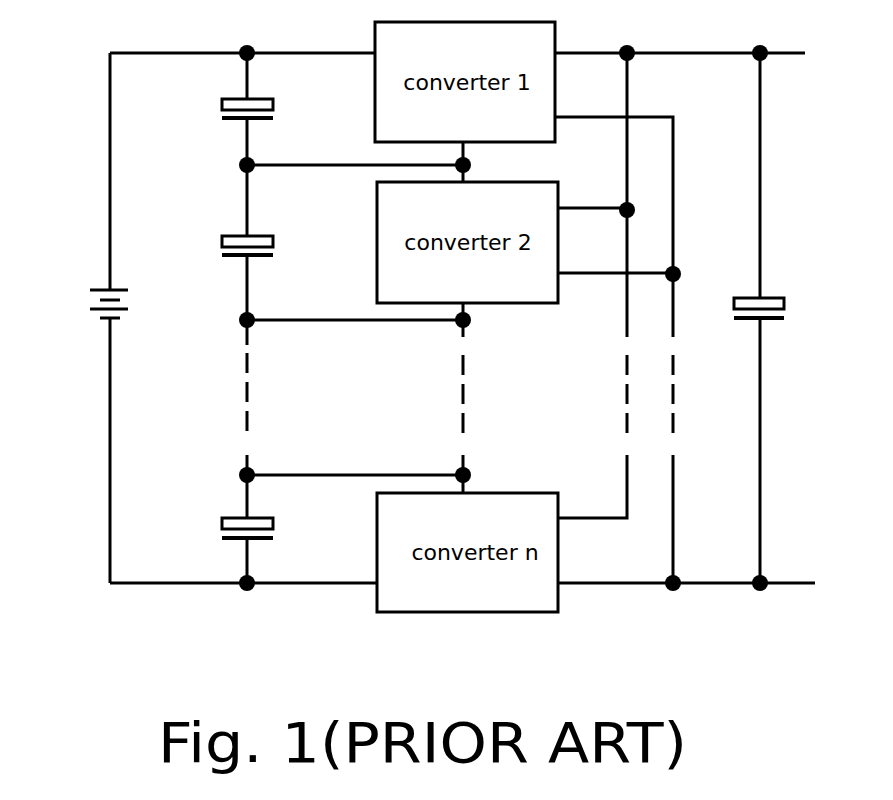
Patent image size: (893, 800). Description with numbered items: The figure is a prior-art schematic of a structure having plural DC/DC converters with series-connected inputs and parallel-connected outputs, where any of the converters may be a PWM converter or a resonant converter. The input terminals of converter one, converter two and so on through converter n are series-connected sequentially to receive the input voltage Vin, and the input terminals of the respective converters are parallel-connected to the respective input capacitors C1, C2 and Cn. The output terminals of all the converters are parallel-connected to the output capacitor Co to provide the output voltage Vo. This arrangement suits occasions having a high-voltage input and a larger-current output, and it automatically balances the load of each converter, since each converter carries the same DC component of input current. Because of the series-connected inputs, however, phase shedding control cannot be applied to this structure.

The input capacitor C1 is at (221, 105).
The input capacitor C2 is at (222, 242).
The input capacitor Cn is at (222, 524).
The output capacitor Co is at (747, 324).
The input voltage Vin is at (84, 305).
The output voltage Vo is at (799, 311).